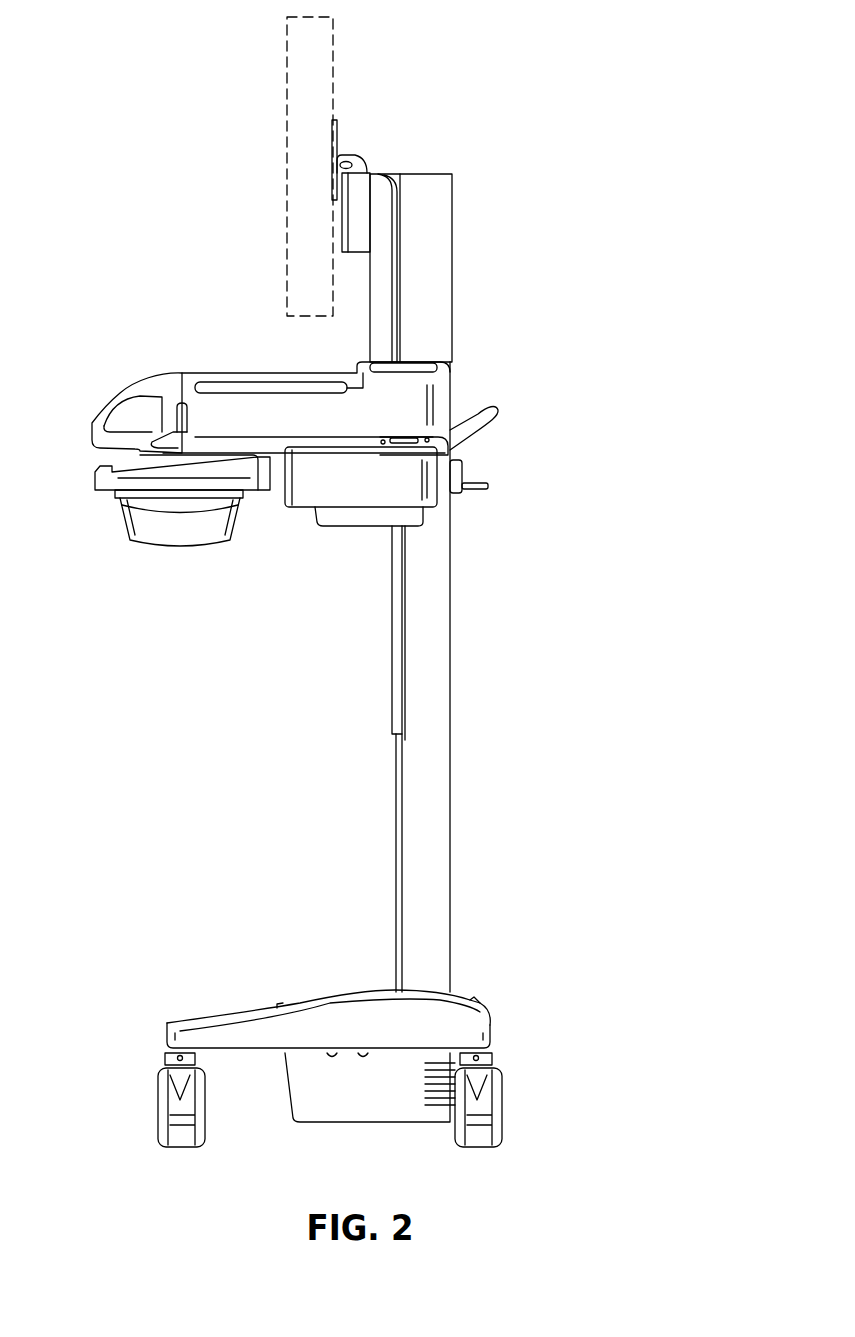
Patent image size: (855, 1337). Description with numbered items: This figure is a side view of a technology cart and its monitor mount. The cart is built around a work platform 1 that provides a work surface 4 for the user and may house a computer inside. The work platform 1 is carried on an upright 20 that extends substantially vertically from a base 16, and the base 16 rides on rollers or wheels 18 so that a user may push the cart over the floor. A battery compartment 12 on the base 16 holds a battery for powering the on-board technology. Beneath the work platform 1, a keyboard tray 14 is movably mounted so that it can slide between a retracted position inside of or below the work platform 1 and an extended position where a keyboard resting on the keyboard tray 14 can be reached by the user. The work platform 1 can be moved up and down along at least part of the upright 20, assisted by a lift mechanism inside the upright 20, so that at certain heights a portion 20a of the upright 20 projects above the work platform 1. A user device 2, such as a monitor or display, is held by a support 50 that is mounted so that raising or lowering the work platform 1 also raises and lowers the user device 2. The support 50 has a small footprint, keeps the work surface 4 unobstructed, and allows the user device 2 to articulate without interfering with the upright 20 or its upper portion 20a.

The work platform 1 is at (278, 610).
The user device 2 is at (335, 70).
The work surface 4 is at (256, 372).
The battery compartment 12 is at (344, 1108).
The keyboard tray 14 is at (106, 470).
The base 16 is at (310, 982).
The wheels 18 is at (195, 1147).
The upright 20 is at (399, 583).
The portion of the upright 20a is at (460, 176).
The support 50 is at (390, 160).